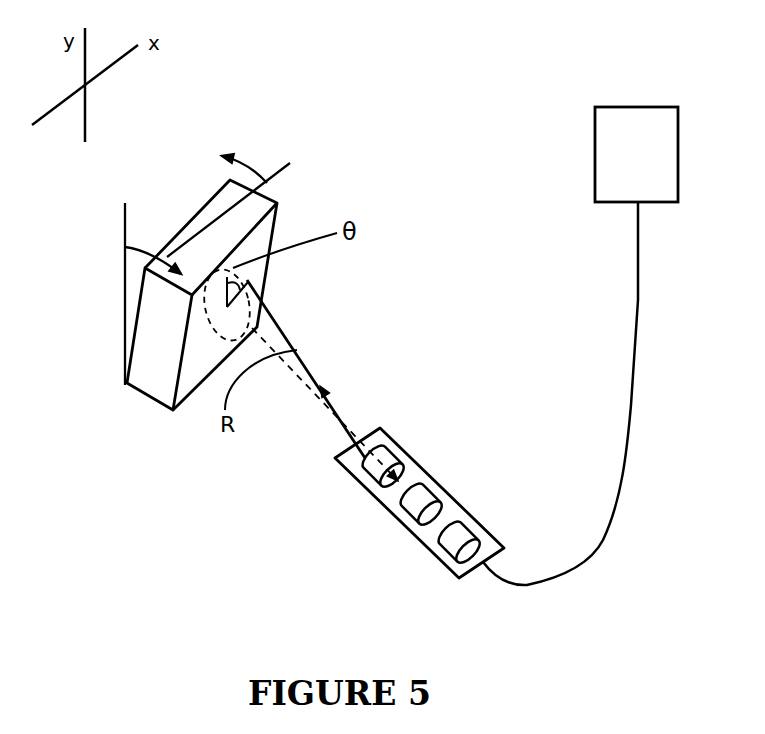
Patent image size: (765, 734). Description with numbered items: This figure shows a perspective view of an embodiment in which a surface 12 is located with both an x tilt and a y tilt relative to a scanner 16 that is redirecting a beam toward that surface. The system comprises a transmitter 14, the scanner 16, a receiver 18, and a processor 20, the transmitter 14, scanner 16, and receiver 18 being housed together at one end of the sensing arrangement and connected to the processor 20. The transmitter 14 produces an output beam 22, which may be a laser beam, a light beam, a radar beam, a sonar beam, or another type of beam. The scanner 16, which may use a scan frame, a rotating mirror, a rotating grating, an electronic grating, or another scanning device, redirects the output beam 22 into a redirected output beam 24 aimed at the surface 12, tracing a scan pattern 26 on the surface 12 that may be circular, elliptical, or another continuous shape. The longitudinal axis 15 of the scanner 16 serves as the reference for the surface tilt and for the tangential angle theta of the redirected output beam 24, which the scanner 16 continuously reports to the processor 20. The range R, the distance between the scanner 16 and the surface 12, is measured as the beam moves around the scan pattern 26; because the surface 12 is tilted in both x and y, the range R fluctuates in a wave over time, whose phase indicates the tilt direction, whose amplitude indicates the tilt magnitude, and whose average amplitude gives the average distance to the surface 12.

The surface 12 is at (275, 235).
The transmitter 14 is at (418, 498).
The longitudinal axis 15 is at (317, 397).
The scanner 16 is at (383, 462).
The receiver 18 is at (463, 540).
The processor 20 is at (662, 107).
The output beam 22 is at (386, 498).
The redirected output beam 24 is at (290, 349).
The scan pattern 26 is at (213, 328).